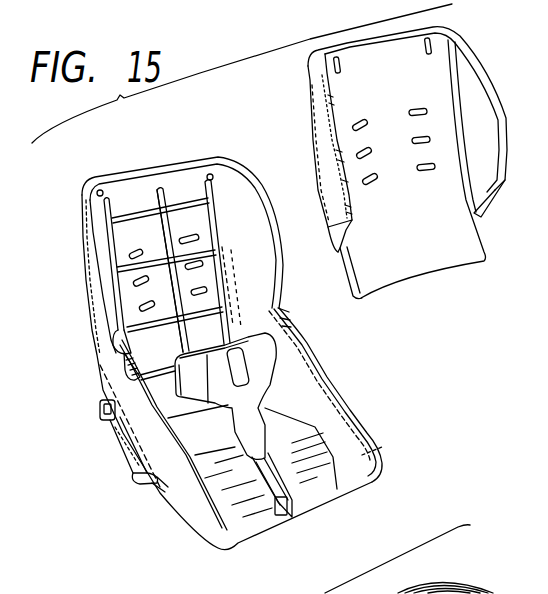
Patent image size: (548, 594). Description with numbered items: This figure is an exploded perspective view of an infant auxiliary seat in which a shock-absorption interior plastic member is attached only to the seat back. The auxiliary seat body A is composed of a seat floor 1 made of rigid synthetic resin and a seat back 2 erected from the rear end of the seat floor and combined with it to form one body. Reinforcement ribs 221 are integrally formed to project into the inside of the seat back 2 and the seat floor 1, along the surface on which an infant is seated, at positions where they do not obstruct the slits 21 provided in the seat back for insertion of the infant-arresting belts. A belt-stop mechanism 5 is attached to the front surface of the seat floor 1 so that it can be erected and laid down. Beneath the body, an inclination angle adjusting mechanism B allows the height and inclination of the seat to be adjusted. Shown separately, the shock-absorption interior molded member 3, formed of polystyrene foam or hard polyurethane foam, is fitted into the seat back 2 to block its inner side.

The auxiliary seat body A is at (88, 181).
The seat floor 1 is at (250, 524).
The seat back 2 is at (86, 286).
The slits 21 is at (143, 311).
The reinforcement ribs 221 is at (188, 196).
The shock-absorption interior molded member 3 is at (436, 255).
The belt-stop mechanism 5 is at (277, 357).
The inclination angle adjusting mechanism B is at (163, 490).